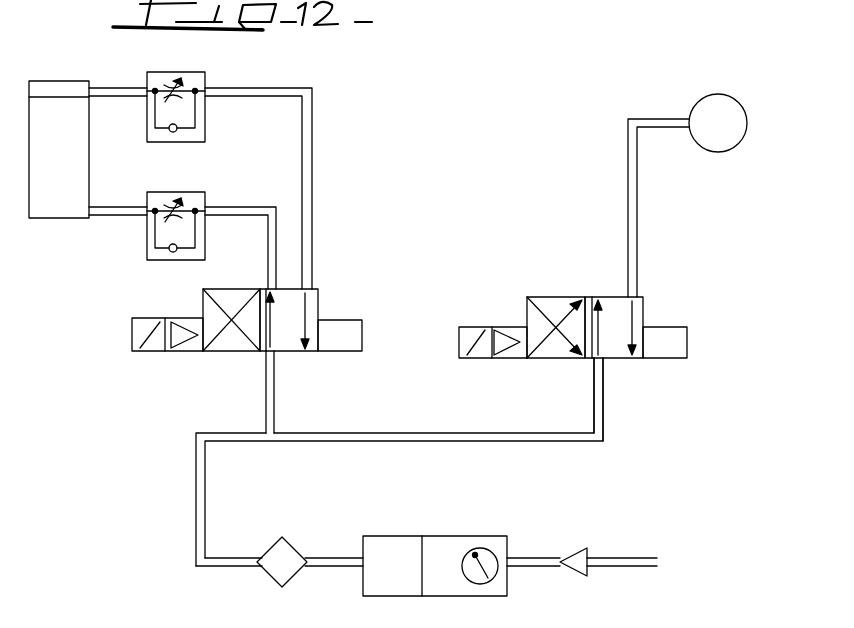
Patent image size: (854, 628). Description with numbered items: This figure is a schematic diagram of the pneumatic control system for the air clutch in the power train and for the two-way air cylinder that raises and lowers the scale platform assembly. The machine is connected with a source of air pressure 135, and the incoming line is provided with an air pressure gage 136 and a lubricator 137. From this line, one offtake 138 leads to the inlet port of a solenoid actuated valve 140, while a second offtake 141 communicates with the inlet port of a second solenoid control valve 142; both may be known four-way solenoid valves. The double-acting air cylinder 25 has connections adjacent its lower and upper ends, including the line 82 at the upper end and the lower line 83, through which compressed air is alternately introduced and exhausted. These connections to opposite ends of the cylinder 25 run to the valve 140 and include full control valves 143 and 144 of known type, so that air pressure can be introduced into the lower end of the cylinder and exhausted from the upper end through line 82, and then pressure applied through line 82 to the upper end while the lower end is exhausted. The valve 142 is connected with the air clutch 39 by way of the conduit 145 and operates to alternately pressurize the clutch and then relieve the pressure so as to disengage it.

The double-acting air cylinder 25 is at (89, 178).
The connection 82 is at (118, 88).
The second cylinder air line 83 is at (107, 215).
The full control valve 143 is at (207, 110).
The full control valve 144 is at (173, 192).
The solenoid actuated valve 140 is at (203, 302).
The second solenoid control valve 142 is at (552, 297).
The offtake 138 is at (266, 405).
The second offtake 141 is at (603, 426).
The conduit 145 is at (628, 198).
The air clutch 39 is at (711, 152).
The lubricator 137 is at (282, 537).
The air pressure gage 136 is at (447, 536).
The source of air pressure 135 is at (617, 565).